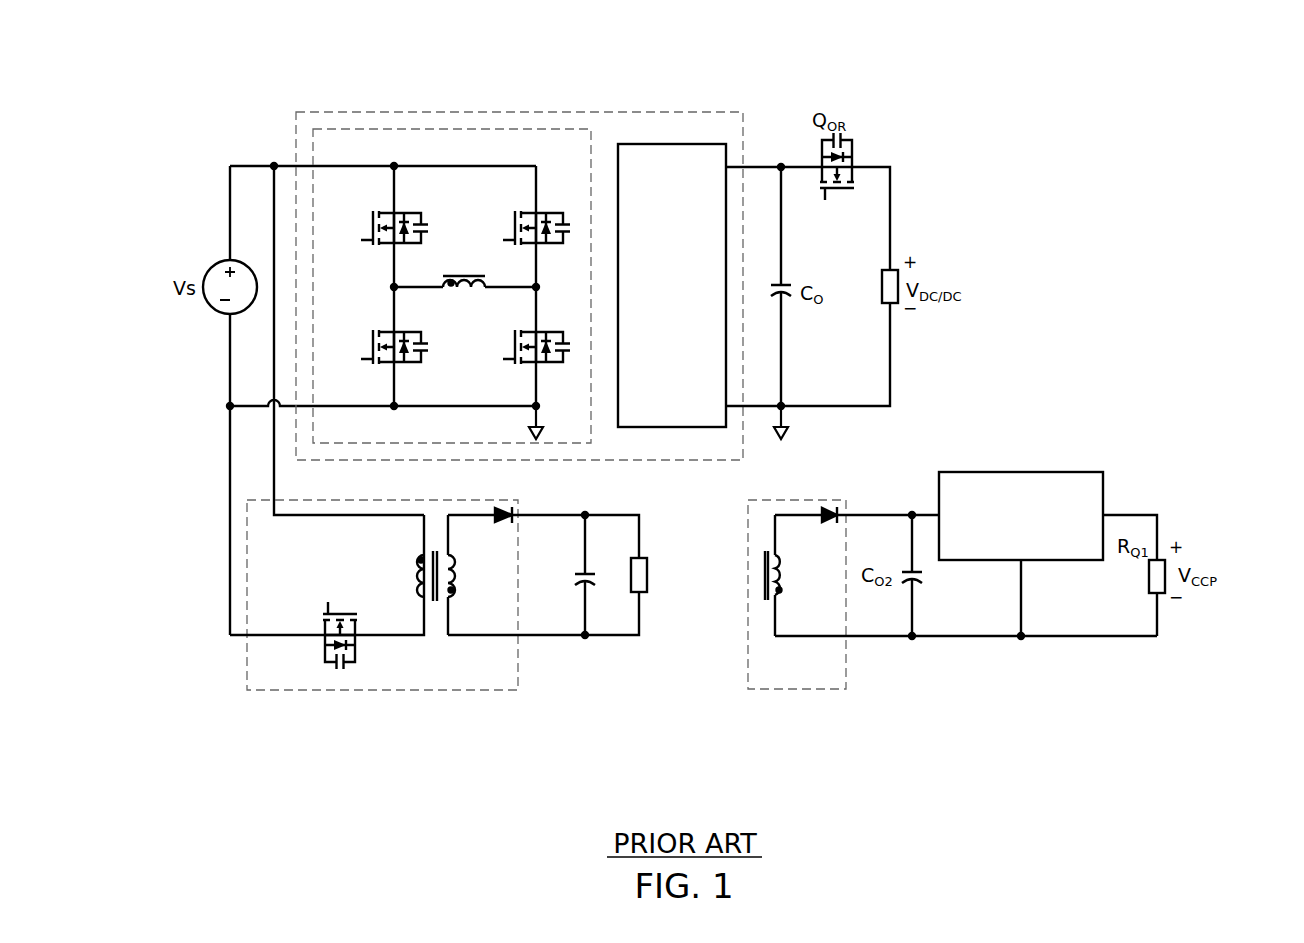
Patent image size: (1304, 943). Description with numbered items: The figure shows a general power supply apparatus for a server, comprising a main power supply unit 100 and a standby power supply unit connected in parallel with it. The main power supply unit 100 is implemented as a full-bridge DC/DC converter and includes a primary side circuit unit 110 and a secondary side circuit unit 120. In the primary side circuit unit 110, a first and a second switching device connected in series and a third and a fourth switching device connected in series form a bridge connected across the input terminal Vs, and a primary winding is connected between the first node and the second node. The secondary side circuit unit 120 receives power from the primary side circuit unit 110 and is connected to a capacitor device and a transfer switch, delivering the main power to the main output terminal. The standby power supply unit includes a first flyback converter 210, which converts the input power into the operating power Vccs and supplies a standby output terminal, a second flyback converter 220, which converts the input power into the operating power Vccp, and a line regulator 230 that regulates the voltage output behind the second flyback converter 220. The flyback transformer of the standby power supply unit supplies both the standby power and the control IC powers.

The main power supply unit 100 is at (567, 112).
The primary side circuit unit 110 is at (452, 129).
The secondary side circuit unit 120 is at (670, 144).
The first flyback converter 210 is at (384, 690).
The second flyback converter 220 is at (797, 689).
The line regulator 230 is at (1020, 472).